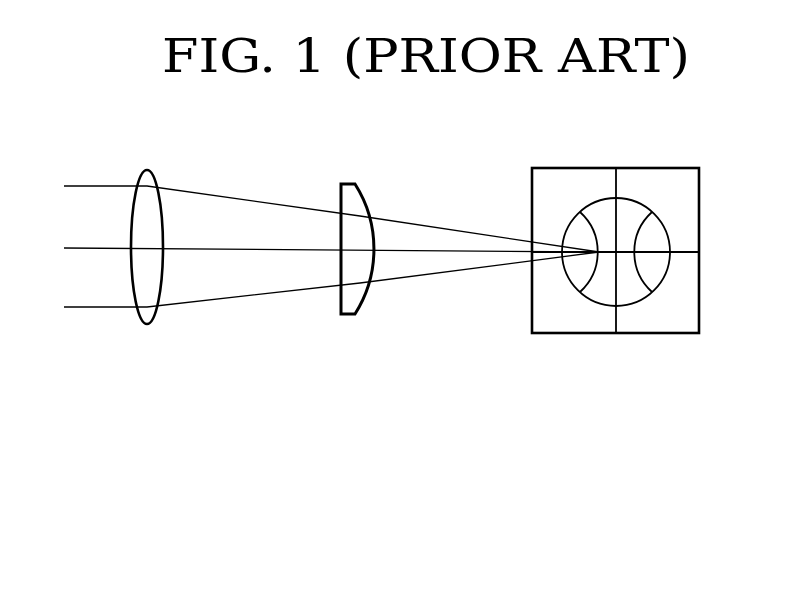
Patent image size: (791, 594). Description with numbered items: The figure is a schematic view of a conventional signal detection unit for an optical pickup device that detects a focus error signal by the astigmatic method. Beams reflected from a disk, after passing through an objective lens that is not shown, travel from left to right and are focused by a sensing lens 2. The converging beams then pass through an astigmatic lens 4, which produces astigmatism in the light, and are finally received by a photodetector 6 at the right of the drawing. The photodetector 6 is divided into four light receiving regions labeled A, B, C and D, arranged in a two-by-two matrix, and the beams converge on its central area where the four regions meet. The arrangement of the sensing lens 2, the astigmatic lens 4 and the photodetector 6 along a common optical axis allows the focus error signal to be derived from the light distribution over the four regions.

The sensing lens 2 is at (147, 324).
The astigmatic lens 4 is at (345, 315).
The photodetector 6 is at (636, 334).